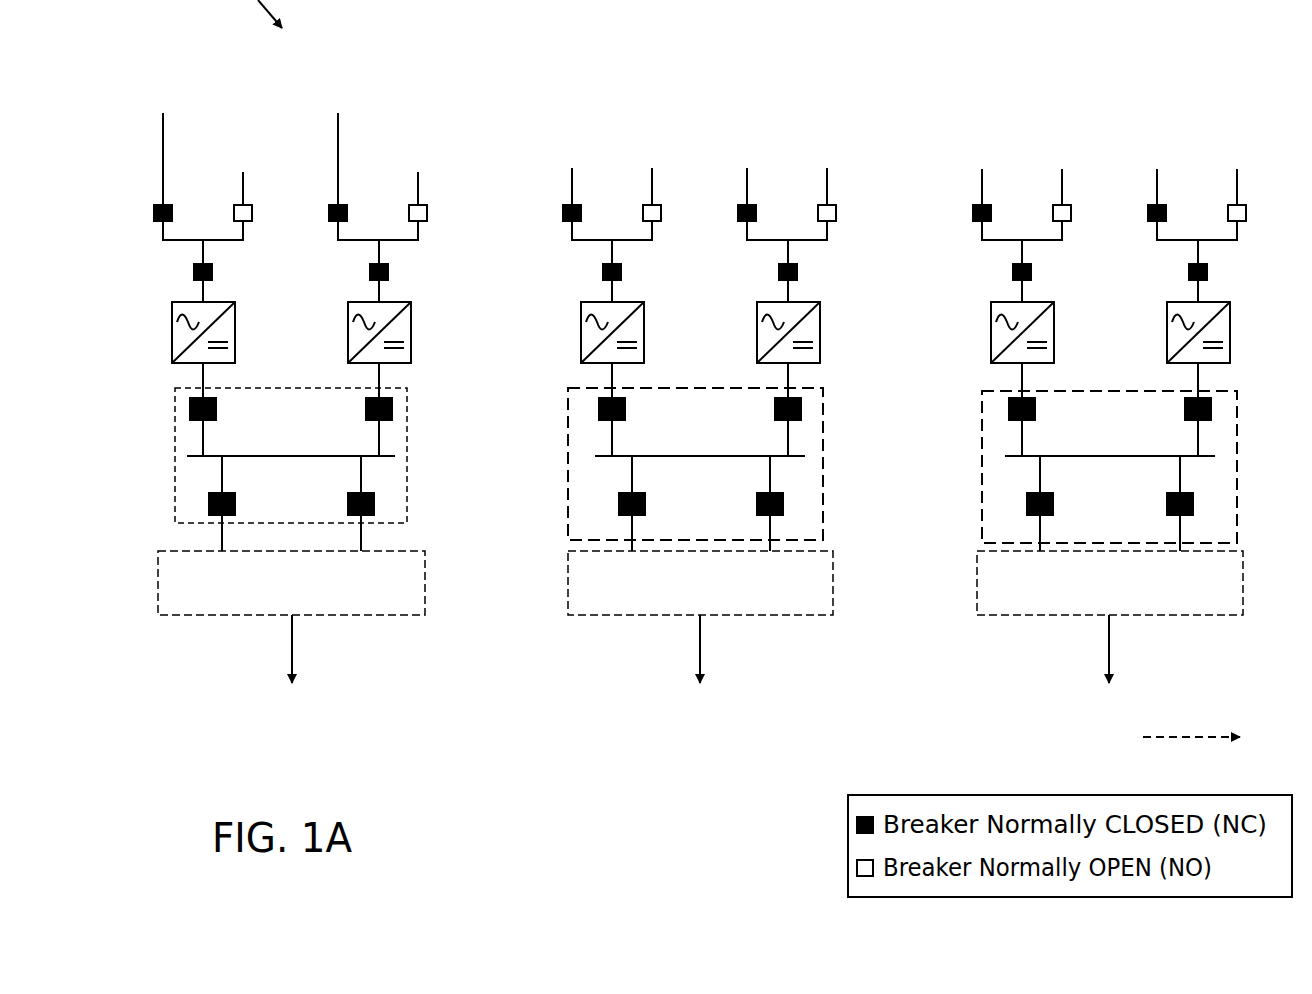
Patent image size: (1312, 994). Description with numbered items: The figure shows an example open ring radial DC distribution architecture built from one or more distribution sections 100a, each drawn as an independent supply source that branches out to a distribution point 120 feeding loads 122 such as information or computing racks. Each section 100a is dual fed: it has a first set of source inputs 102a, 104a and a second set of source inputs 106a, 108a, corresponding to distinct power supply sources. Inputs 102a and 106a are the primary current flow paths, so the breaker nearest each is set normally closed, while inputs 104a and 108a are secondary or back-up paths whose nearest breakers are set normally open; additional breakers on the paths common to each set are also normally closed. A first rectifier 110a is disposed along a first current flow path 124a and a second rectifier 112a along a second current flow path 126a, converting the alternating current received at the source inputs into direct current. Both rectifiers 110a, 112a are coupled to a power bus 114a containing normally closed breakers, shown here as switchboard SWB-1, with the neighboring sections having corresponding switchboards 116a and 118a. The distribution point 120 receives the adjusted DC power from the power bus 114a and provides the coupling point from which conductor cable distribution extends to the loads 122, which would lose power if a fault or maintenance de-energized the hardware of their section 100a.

The distribution section 100a is at (697, 143).
The source input 102a is at (147, 72).
The source input 104a is at (217, 138).
The source input 106a is at (342, 72).
The source input 108a is at (435, 140).
The first rectifier 110a is at (177, 300).
The second rectifier 112a is at (409, 300).
The power bus 114a is at (175, 450).
The switchboard SWB-2 116a is at (660, 457).
The switchboard SWB-3 118a is at (1062, 457).
The distribution point 120 is at (165, 551).
The loads 122 is at (350, 673).
The first current flow path 124a is at (204, 259).
The second current flow path 126a is at (380, 259).